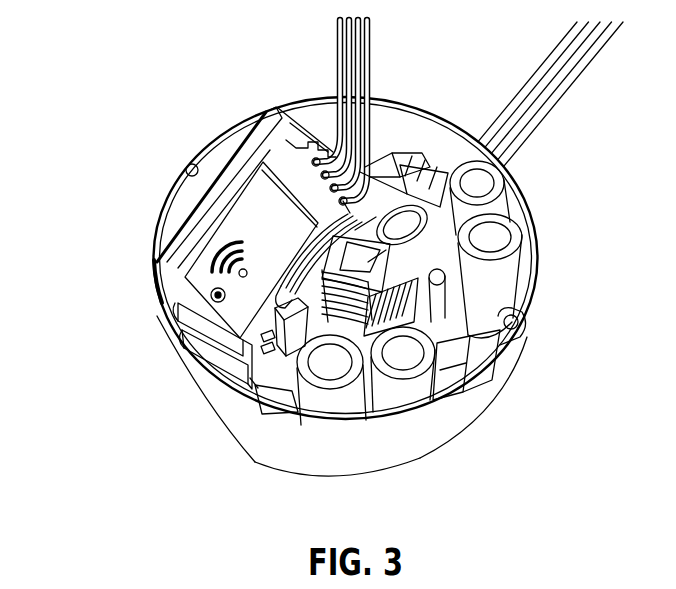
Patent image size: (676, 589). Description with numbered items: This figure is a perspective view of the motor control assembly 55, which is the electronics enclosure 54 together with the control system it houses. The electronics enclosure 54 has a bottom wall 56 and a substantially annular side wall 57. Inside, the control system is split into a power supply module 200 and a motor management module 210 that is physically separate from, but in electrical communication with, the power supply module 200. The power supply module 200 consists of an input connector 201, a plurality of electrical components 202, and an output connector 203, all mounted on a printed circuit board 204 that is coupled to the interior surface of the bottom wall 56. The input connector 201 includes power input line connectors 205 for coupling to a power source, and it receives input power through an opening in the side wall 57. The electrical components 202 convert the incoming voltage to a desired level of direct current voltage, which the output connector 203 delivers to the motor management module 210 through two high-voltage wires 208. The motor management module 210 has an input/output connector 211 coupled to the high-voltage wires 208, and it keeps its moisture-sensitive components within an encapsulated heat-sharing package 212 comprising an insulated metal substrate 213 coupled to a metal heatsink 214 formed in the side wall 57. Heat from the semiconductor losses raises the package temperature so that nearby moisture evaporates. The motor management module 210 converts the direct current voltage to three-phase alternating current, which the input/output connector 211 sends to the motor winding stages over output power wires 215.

The electronics enclosure 54 is at (533, 222).
The motor control assembly 55 is at (100, 106).
The bottom wall 56 is at (373, 474).
The side wall 57 is at (463, 408).
The power supply module 200 is at (255, 398).
The input connector 201 is at (428, 173).
The electrical components 202 is at (403, 355).
The output connector 203 is at (288, 382).
The printed circuit board 204 is at (268, 362).
The power input line connectors 205 is at (557, 98).
The high-voltage wires 208 is at (230, 366).
The motor management module 210 is at (143, 293).
The input/output connector 211 is at (301, 155).
The heat-sharing package 212 is at (200, 258).
The insulated metal substrate 213 is at (196, 234).
The metal heatsink 214 is at (203, 201).
The output power wires 215 is at (370, 50).